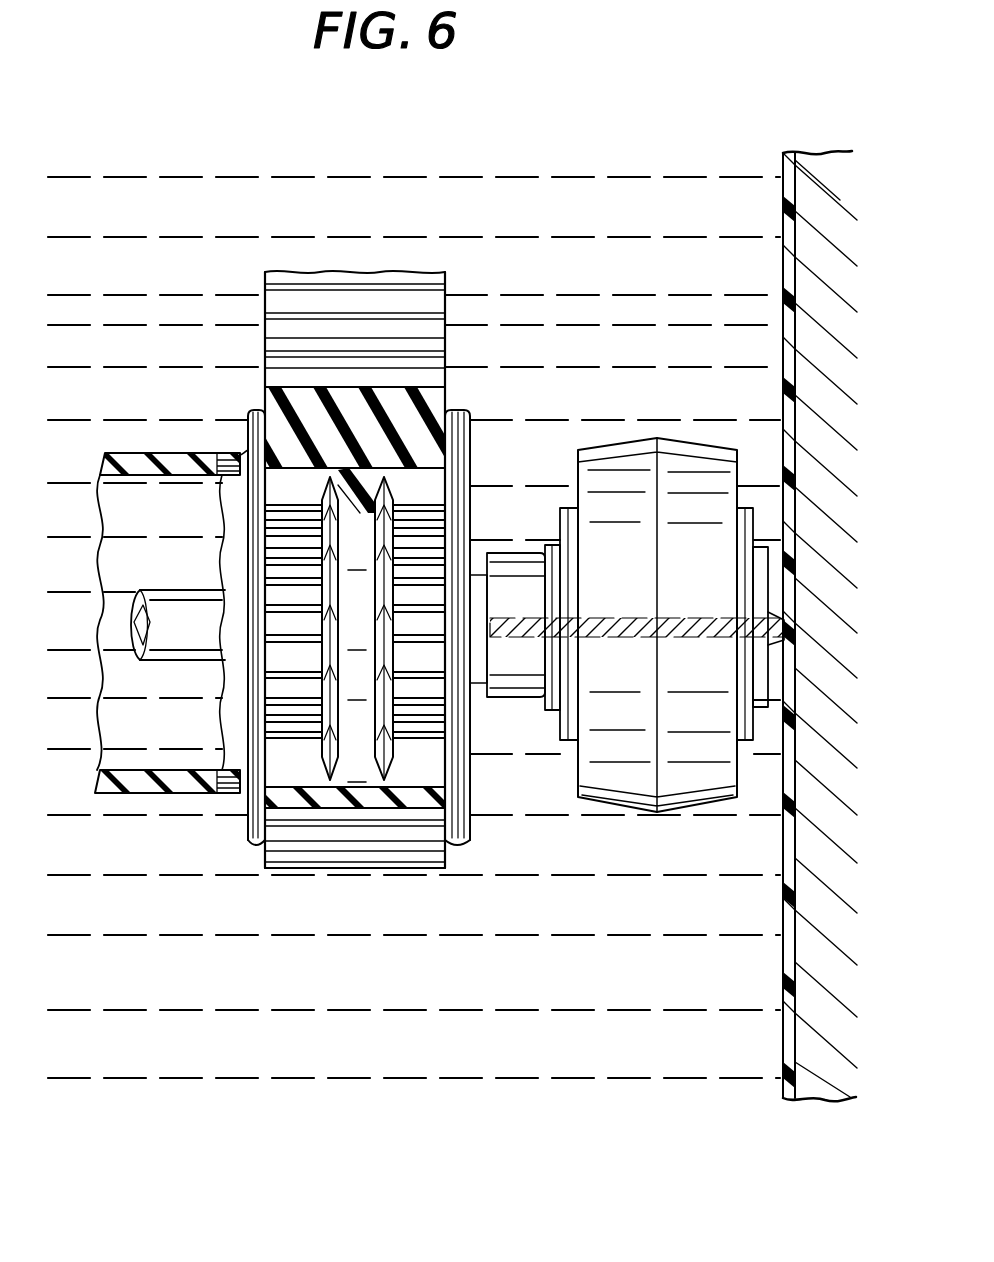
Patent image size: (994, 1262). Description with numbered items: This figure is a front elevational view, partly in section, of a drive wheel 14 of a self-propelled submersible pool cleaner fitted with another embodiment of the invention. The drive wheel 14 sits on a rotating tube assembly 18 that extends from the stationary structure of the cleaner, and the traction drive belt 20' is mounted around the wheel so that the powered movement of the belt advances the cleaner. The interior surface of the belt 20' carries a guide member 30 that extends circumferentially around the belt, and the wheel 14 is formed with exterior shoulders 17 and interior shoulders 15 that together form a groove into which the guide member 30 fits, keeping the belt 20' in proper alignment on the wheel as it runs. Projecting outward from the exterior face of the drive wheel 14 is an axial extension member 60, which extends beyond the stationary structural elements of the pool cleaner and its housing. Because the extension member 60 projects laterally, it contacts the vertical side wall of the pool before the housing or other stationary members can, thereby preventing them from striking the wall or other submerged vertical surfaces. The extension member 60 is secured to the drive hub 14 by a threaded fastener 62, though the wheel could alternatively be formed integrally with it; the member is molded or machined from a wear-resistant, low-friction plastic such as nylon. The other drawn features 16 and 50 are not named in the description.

The drive wheel 14 is at (238, 843).
The interior shoulders 15 is at (325, 772).
The inner shaft 16 is at (183, 665).
The exterior shoulders 17 is at (245, 812).
The rotating tube assembly 18 is at (178, 453).
The traction drive belt 20' is at (343, 531).
The guide member 30 is at (358, 778).
The wall 50 is at (798, 262).
The axial extension member 60 is at (637, 437).
The threaded fastener 62 is at (793, 626).